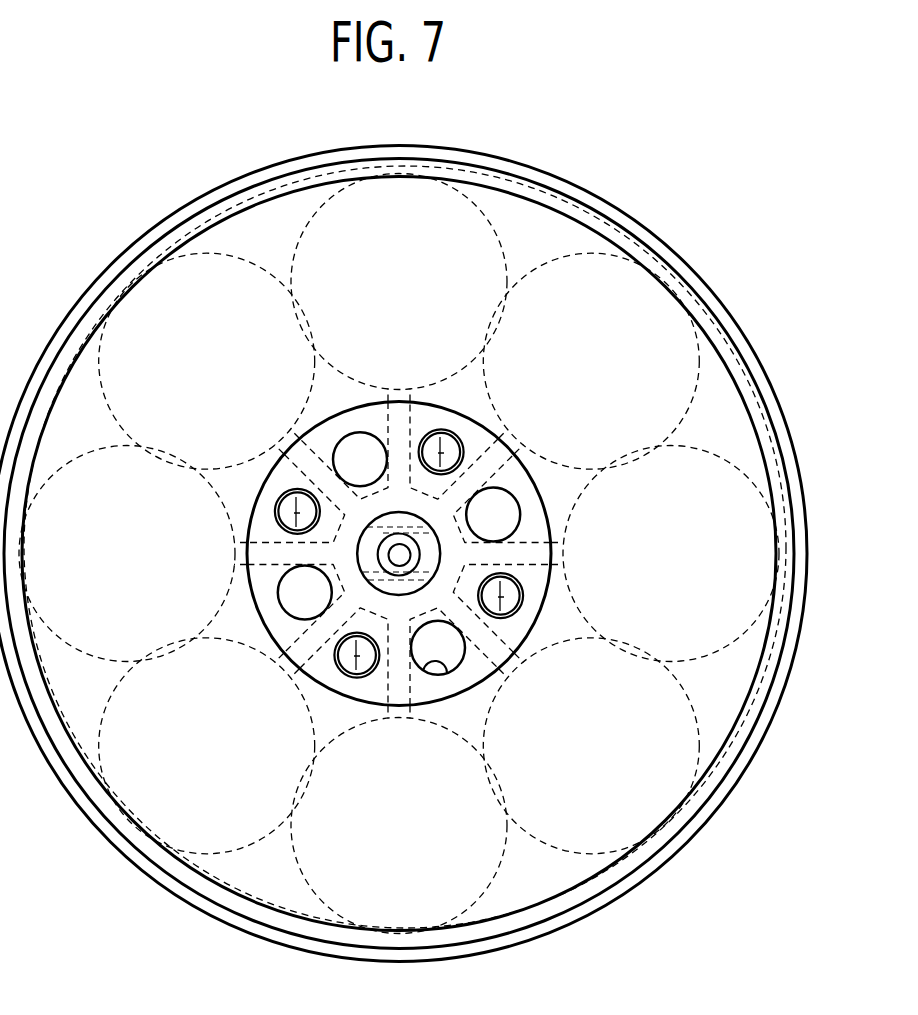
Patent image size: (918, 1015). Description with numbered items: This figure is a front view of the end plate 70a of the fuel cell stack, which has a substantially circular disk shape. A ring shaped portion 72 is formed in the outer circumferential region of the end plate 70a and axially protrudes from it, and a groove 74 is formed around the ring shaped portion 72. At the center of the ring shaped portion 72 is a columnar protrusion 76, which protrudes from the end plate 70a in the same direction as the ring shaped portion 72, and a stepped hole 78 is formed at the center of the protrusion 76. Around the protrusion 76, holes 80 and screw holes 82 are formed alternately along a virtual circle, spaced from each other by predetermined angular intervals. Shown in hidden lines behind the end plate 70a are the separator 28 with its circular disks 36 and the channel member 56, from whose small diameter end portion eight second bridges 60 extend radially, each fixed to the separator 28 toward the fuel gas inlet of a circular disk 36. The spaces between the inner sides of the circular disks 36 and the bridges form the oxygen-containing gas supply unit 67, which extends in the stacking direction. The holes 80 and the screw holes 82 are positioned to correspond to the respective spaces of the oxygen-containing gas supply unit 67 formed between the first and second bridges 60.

The end plate 70a is at (399, 551).
The ring shaped portion 72 is at (168, 231).
The groove 74 is at (128, 252).
The separator 28 is at (403, 554).
The circular disk 36 is at (762, 548).
The channel member 56 is at (377, 553).
The oxygen-containing gas supply unit 67 is at (533, 445).
The second bridges 60 is at (529, 549).
The stepped hole 78 is at (400, 582).
The columnar protrusion 76 is at (432, 568).
The screw holes 82 is at (345, 672).
The holes 80 is at (448, 674).